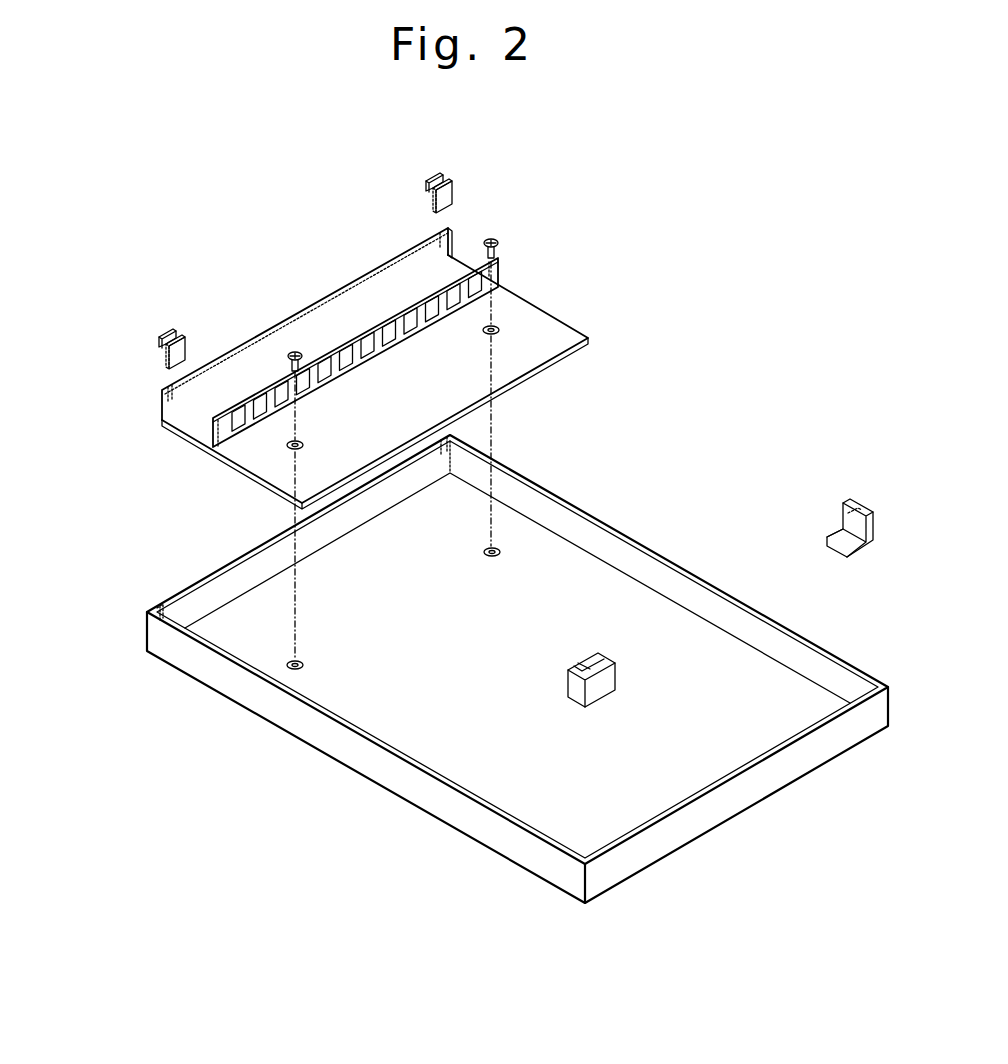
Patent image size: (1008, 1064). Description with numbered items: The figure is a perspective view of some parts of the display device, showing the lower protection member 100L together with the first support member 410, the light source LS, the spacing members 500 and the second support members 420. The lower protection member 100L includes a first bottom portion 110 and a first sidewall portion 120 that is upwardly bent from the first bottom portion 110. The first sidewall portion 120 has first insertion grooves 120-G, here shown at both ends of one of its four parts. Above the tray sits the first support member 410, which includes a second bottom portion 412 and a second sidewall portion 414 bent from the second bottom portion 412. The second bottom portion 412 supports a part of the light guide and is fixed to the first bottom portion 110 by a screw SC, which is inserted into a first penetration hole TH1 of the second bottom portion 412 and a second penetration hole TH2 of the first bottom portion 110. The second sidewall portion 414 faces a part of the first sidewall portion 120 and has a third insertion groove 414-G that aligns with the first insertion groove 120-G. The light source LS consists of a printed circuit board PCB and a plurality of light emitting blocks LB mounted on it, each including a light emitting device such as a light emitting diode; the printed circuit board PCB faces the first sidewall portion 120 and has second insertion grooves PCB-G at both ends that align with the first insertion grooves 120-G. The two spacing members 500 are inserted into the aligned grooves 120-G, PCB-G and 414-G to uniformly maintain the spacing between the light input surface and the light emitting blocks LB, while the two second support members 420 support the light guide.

The lower protection member 100L is at (495, 669).
The first bottom portion 110 is at (517, 672).
The first sidewall portion 120 is at (495, 649).
The first insertion groove 120-G is at (163, 609).
The second penetration hole TH2 is at (503, 540).
The first support member 410 is at (309, 368).
The second bottom portion 412 is at (334, 382).
The second sidewall portion 414 is at (254, 324).
The third insertion groove 414-G is at (170, 390).
The first penetration hole TH1 is at (497, 327).
The light source LS is at (276, 349).
The printed circuit board PCB is at (276, 377).
The second insertion groove PCB-G is at (220, 428).
The light emitting blocks LB is at (388, 322).
The screw SC is at (496, 240).
The spacing member 500 is at (447, 176).
The second support member 420 is at (606, 667).